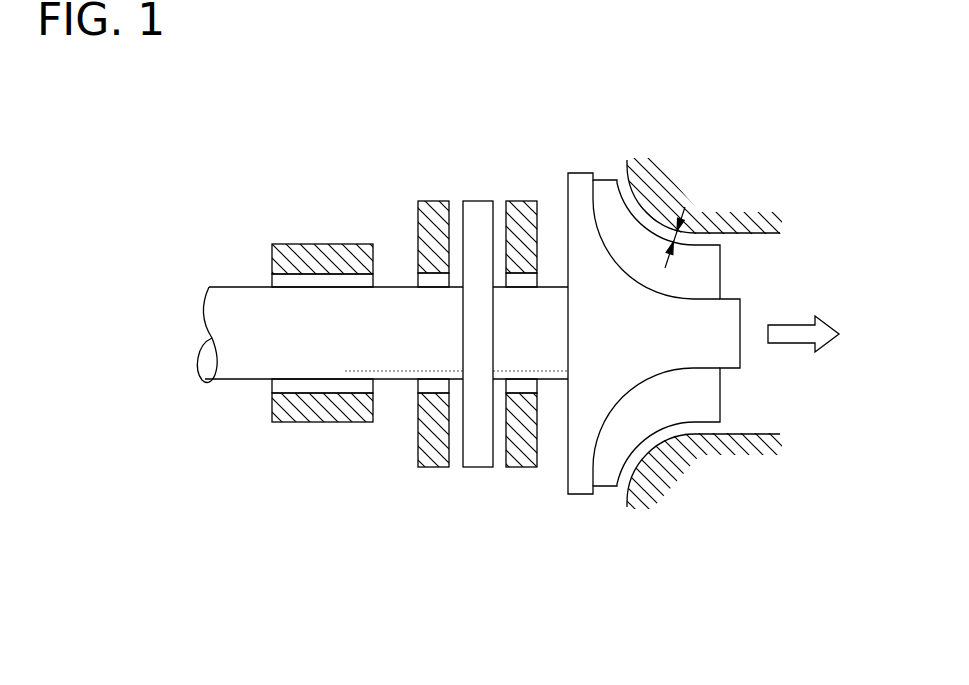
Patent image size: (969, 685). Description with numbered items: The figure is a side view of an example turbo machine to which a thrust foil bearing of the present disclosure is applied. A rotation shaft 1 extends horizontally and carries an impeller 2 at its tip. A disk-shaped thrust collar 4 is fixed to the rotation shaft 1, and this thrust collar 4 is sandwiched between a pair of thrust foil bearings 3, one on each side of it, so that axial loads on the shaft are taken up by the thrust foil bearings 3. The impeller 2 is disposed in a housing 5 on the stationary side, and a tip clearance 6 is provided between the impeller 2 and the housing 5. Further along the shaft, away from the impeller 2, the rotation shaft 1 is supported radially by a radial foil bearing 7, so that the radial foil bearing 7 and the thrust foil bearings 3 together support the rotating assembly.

The rotation shaft 1 is at (233, 296).
The impeller 2 is at (623, 237).
The thrust foil bearing 3 is at (432, 215).
The thrust collar 4 is at (480, 213).
The housing 5 is at (658, 200).
The tip clearance 6 is at (693, 236).
The radial foil bearing 7 is at (323, 257).